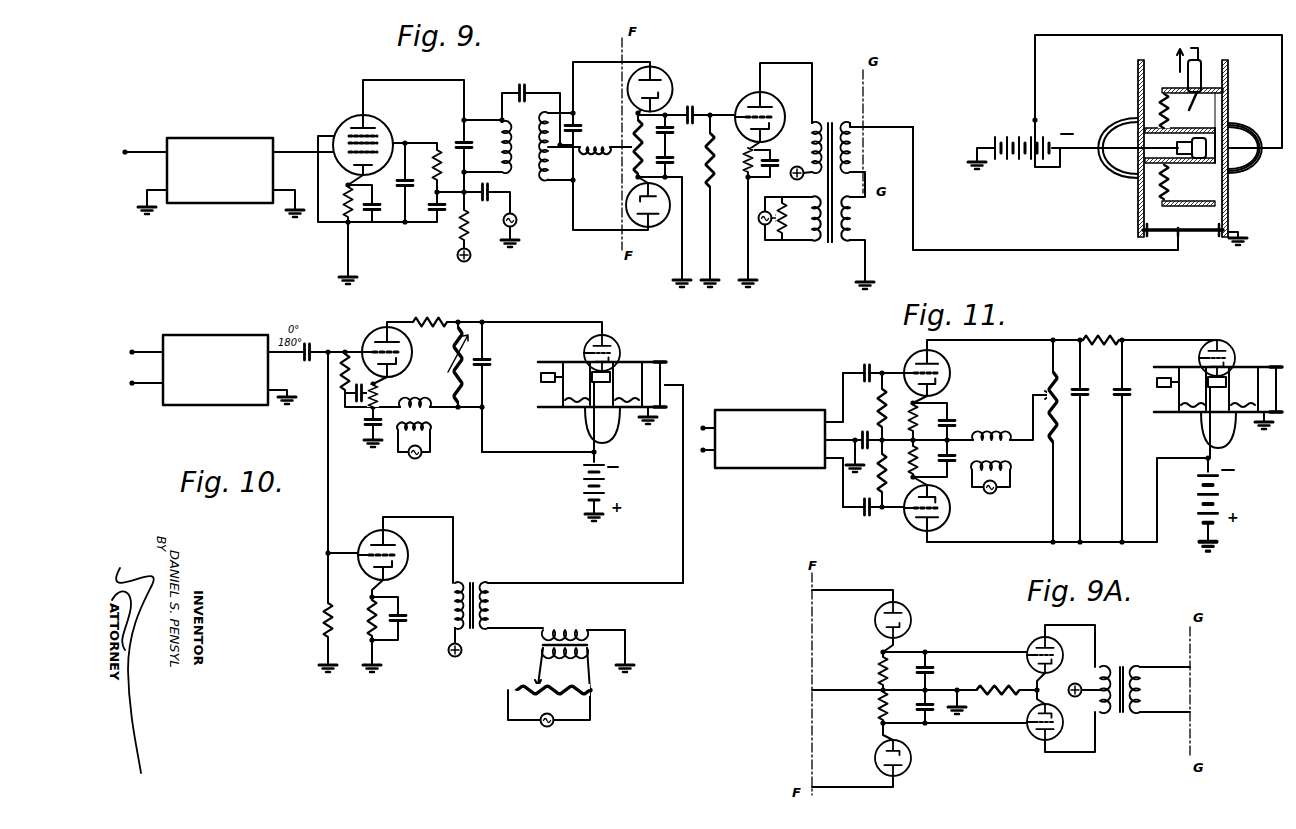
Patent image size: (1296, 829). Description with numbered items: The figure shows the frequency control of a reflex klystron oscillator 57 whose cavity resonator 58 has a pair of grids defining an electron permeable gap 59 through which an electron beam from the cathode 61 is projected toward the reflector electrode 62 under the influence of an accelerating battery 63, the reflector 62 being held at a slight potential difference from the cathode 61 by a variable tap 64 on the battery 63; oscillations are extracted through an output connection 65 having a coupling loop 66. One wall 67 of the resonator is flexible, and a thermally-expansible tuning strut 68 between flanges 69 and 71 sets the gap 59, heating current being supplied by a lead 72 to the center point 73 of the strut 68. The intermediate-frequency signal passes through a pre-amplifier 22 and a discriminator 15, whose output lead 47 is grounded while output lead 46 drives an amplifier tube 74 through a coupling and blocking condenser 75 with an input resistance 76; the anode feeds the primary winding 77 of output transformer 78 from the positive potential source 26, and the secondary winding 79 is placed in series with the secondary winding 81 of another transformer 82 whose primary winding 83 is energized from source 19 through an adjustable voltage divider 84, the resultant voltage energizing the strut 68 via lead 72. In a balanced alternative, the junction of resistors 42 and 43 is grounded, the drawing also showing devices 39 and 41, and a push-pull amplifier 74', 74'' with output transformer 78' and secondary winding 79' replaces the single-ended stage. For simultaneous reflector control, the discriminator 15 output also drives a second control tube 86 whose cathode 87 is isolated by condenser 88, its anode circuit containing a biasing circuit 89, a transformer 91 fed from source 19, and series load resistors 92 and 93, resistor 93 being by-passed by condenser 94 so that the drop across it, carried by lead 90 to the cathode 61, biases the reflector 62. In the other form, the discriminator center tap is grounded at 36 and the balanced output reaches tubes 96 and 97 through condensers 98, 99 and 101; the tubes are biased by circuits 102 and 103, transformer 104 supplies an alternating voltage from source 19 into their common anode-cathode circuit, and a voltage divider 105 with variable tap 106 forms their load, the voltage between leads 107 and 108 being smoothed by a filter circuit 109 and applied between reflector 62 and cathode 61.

In FIG. 10, the discriminator 15 is at (238, 335).
In FIG. 11, the discriminator 15 is at (770, 410).
In FIG. 9, the source 19 is at (759, 224).
In FIG. 10, the source 19 is at (419, 459).
In FIG. 11, the source 19 is at (996, 492).
In FIG. 9, the pre-amplifier 22 is at (241, 138).
In FIG. 9, the positive potential source 26 is at (797, 166).
In FIG. 11, the ground connection 36 is at (858, 438).
In FIG. 9A, the rectifier tube 39 is at (909, 608).
In FIG. 9A, the rectifier tube 41 is at (910, 765).
In FIG. 9A, the resistor 42 is at (877, 664).
In FIG. 9A, the resistor 43 is at (877, 712).
In FIG. 9, the output lead 46 is at (683, 112).
In FIG. 11, the output lead 46 is at (842, 415).
In FIG. 9A, the output lead 46 is at (963, 651).
In FIG. 9, the output lead 47 is at (684, 175).
In FIG. 11, the output lead 47 is at (842, 466).
In FIG. 9A, the output lead 47 is at (945, 724).
In FIG. 9, the reflex klystron oscillator 57 is at (1268, 80).
In FIG. 10, the reflex klystron oscillator 57 is at (640, 358).
In FIG. 11, the reflex klystron oscillator 57 is at (1238, 342).
In FIG. 9, the cavity resonator 58 is at (1225, 112).
In FIG. 9, the electron permeable gap 59 is at (1205, 168).
In FIG. 9, the cathode 61 is at (1186, 158).
In FIG. 10, the cathode 61 is at (606, 420).
In FIG. 11, the cathode 61 is at (1231, 438).
In FIG. 9, the reflector electrode 62 is at (1240, 165).
In FIG. 10, the reflector electrode 62 is at (611, 343).
In FIG. 11, the reflector electrode 62 is at (1232, 352).
In FIG. 9, the accelerating battery 63 is at (1048, 170).
In FIG. 9, the variable tap 64 is at (1030, 128).
In FIG. 9, the output connection 65 is at (1201, 70).
In FIG. 9, the coupling loop 66 is at (1190, 104).
In FIG. 9, the flexible wall 67 is at (1158, 105).
In FIG. 9, the thermally-expansible tuning strut 68 is at (1200, 240).
In FIG. 10, the thermally-expansible tuning strut 68 is at (675, 376).
In FIG. 9, the flange 69 is at (1228, 212).
In FIG. 9, the flange 71 is at (1138, 227).
In FIG. 9, the lead 72 is at (1040, 252).
In FIG. 9, the center point 73 is at (1187, 229).
In FIG. 9, the amplifier tube 74 is at (756, 102).
In FIG. 10, the amplifier tube 74 is at (398, 552).
In FIG. 9A, the push-pull amplifier tube 74' is at (1037, 643).
In FIG. 9A, the push-pull amplifier tube 74'' is at (1033, 734).
In FIG. 9, the coupling and direct current blocking condenser 75 is at (694, 112).
In FIG. 9, the input resistance 76 is at (714, 182).
In FIG. 9, the primary winding 77 is at (816, 120).
In FIG. 9, the output transformer 78 is at (841, 168).
In FIG. 10, the output transformer 78 is at (476, 603).
In FIG. 9A, the output transformer 78' is at (1127, 707).
In FIG. 9, the secondary winding 79 is at (873, 137).
In FIG. 9A, the secondary winding 79' is at (1151, 671).
In FIG. 9, the secondary winding 81 is at (849, 242).
In FIG. 9, the transformer 82 is at (829, 248).
In FIG. 10, the transformer 82 is at (540, 645).
In FIG. 9, the primary winding 83 is at (814, 242).
In FIG. 9, the adjustable voltage divider 84 is at (782, 242).
In FIG. 10, the second control tube 86 is at (365, 340).
In FIG. 10, the cathode 87 is at (400, 364).
In FIG. 10, the condenser 88 is at (365, 430).
In FIG. 10, the biasing circuit 89 is at (383, 392).
In FIG. 10, the lead 90 is at (485, 422).
In FIG. 10, the transformer 91 is at (431, 411).
In FIG. 10, the load resistor 92 is at (435, 318).
In FIG. 10, the load resistor 93 is at (462, 332).
In FIG. 10, the condenser 94 is at (490, 360).
In FIG. 11, the electron discharge device 96 is at (952, 372).
In FIG. 11, the electron discharge device 97 is at (951, 515).
In FIG. 11, the coupling and blocking condenser 98 is at (870, 368).
In FIG. 11, the coupling and blocking condenser 99 is at (872, 514).
In FIG. 11, the coupling and blocking condenser 101 is at (884, 432).
In FIG. 11, the biasing circuit 102 is at (926, 420).
In FIG. 11, the biasing circuit 103 is at (936, 470).
In FIG. 11, the transformer 104 is at (1011, 449).
In FIG. 11, the voltage divider 105 is at (1062, 437).
In FIG. 11, the variable tap 106 is at (1040, 394).
In FIG. 11, the lead 107 is at (1078, 338).
In FIG. 11, the lead 108 is at (1068, 544).
In FIG. 11, the filter circuit 109 is at (1113, 379).